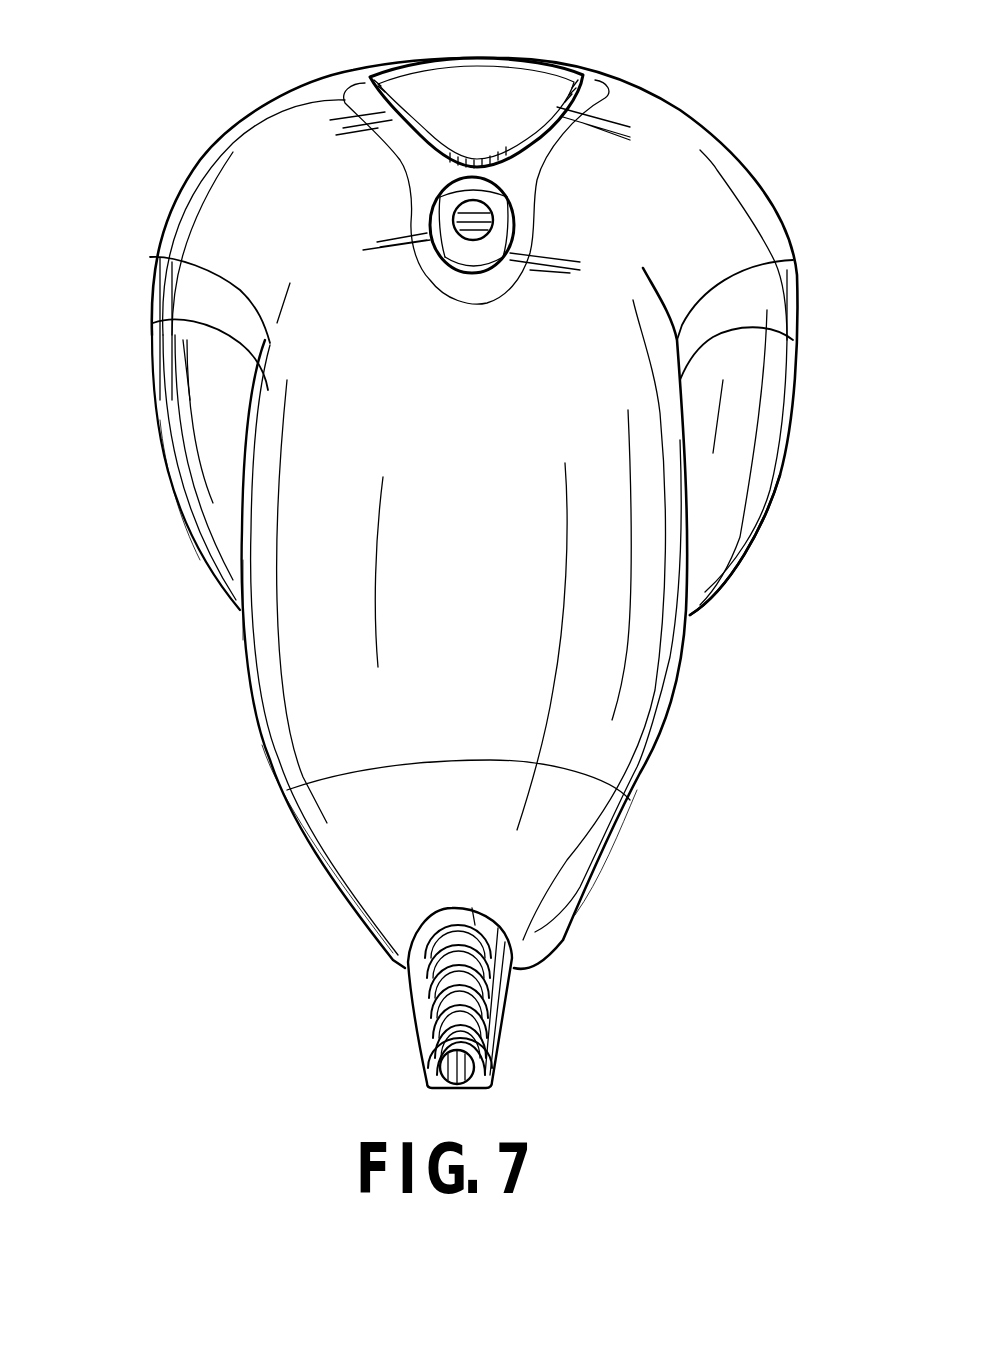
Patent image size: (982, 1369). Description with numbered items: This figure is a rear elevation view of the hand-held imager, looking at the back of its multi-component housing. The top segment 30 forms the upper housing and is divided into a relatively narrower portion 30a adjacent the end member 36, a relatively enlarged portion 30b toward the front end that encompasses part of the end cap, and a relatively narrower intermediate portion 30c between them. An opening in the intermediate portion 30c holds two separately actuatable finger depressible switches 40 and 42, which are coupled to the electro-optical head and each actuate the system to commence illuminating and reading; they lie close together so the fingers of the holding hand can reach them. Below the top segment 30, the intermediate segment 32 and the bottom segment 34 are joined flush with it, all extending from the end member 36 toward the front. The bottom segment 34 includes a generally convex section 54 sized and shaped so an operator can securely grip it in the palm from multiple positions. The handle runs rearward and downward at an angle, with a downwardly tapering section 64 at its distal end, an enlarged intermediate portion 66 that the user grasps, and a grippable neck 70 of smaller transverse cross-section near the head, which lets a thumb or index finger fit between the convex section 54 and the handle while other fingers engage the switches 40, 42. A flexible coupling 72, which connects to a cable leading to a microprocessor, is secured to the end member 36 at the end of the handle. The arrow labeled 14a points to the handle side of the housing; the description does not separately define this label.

The spraying device / housing assembly 14a is at (210, 542).
The top segment 30 is at (767, 197).
The relatively narrower portion 30a is at (637, 768).
The relatively enlarged portion 30b is at (723, 170).
The intermediate portion 30c is at (379, 323).
The intermediate segment 32 is at (783, 300).
The bottom segment 34 is at (777, 393).
The end member 36 is at (587, 873).
The finger depressible switch 40 is at (475, 222).
The finger depressible switch 42 is at (497, 62).
The convex section 54 is at (737, 477).
The downwardly tapering section 64 is at (272, 762).
The intermediate portion 66 is at (310, 628).
The grippable neck 70 is at (267, 337).
The flexible coupling 72 is at (507, 1008).